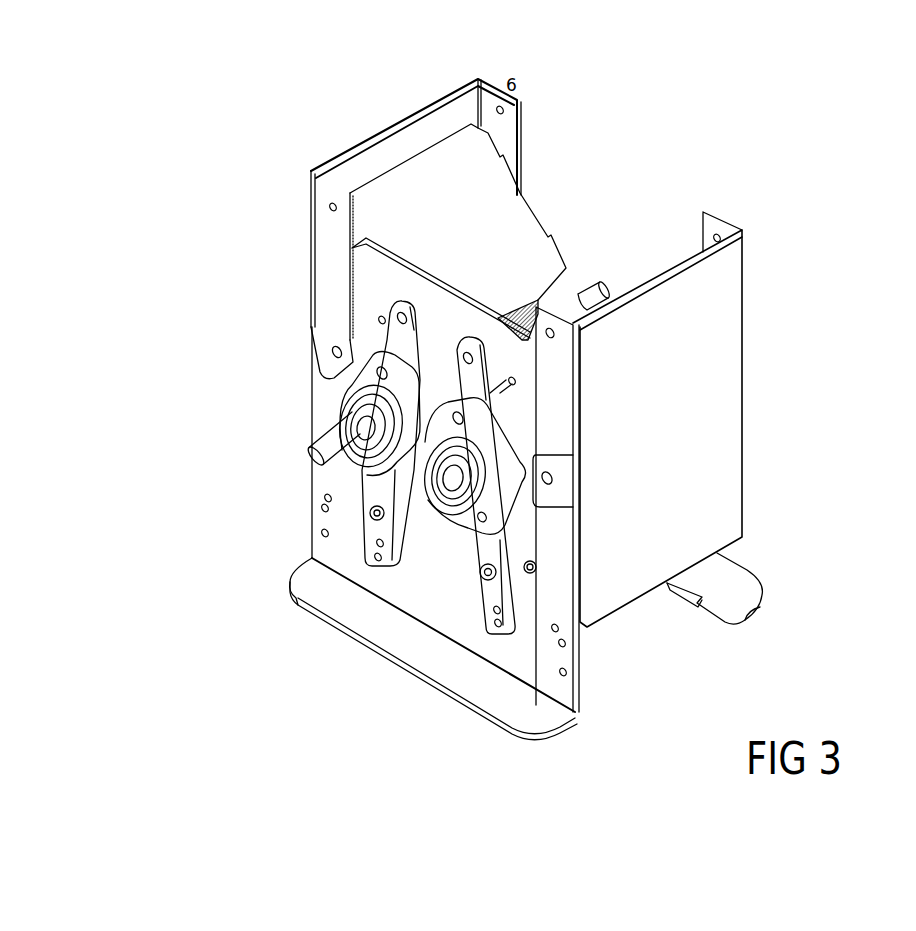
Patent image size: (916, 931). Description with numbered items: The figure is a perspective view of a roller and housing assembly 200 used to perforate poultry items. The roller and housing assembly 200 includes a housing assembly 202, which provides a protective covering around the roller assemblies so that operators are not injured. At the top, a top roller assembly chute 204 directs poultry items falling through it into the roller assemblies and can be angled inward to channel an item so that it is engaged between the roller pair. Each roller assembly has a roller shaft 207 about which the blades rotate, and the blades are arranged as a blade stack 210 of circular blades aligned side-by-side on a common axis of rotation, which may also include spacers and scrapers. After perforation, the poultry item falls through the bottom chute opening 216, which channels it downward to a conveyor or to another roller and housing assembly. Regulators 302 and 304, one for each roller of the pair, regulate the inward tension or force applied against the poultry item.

The roller and housing assembly 200 is at (664, 113).
The housing assembly 202 is at (725, 307).
The top roller assembly chute 204 is at (493, 213).
The roller shaft 207 is at (605, 285).
The blade stack 210 is at (548, 293).
The bottom chute opening 216 is at (615, 647).
The regulator 302 is at (346, 409).
The regulator 304 is at (457, 513).